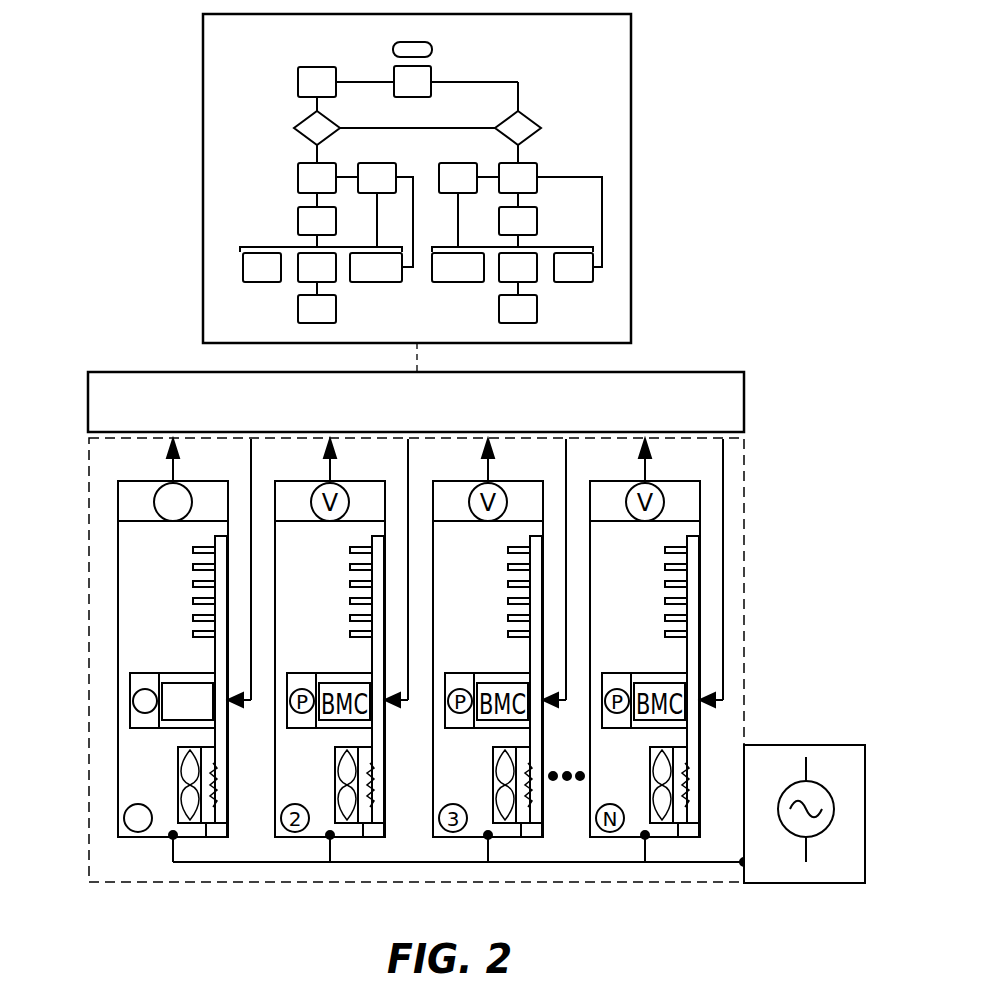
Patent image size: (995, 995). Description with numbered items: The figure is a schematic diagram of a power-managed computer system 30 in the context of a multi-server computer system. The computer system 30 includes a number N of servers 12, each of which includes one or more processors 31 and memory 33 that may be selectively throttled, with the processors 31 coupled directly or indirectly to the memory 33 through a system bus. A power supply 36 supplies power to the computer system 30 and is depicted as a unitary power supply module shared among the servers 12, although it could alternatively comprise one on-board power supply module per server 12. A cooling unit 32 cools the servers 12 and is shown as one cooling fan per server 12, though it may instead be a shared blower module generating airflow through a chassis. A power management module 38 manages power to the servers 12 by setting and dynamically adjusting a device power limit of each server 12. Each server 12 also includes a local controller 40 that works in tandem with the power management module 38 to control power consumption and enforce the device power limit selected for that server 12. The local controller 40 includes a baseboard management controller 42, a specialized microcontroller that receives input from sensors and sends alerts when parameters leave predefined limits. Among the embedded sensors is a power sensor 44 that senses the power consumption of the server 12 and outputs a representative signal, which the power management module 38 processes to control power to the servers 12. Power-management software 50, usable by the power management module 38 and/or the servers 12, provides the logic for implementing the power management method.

The server 12 is at (165, 687).
The power-managed computer system 30 is at (727, 252).
The processor 31 is at (205, 813).
The cooling unit 32 is at (188, 758).
The memory 33 is at (200, 570).
The power supply 36 is at (823, 745).
The power management module 38 is at (650, 372).
The local controller 40 is at (130, 724).
The baseboard management controller 42 is at (190, 682).
The power sensor 44 is at (130, 678).
The power-management software 50 is at (632, 36).